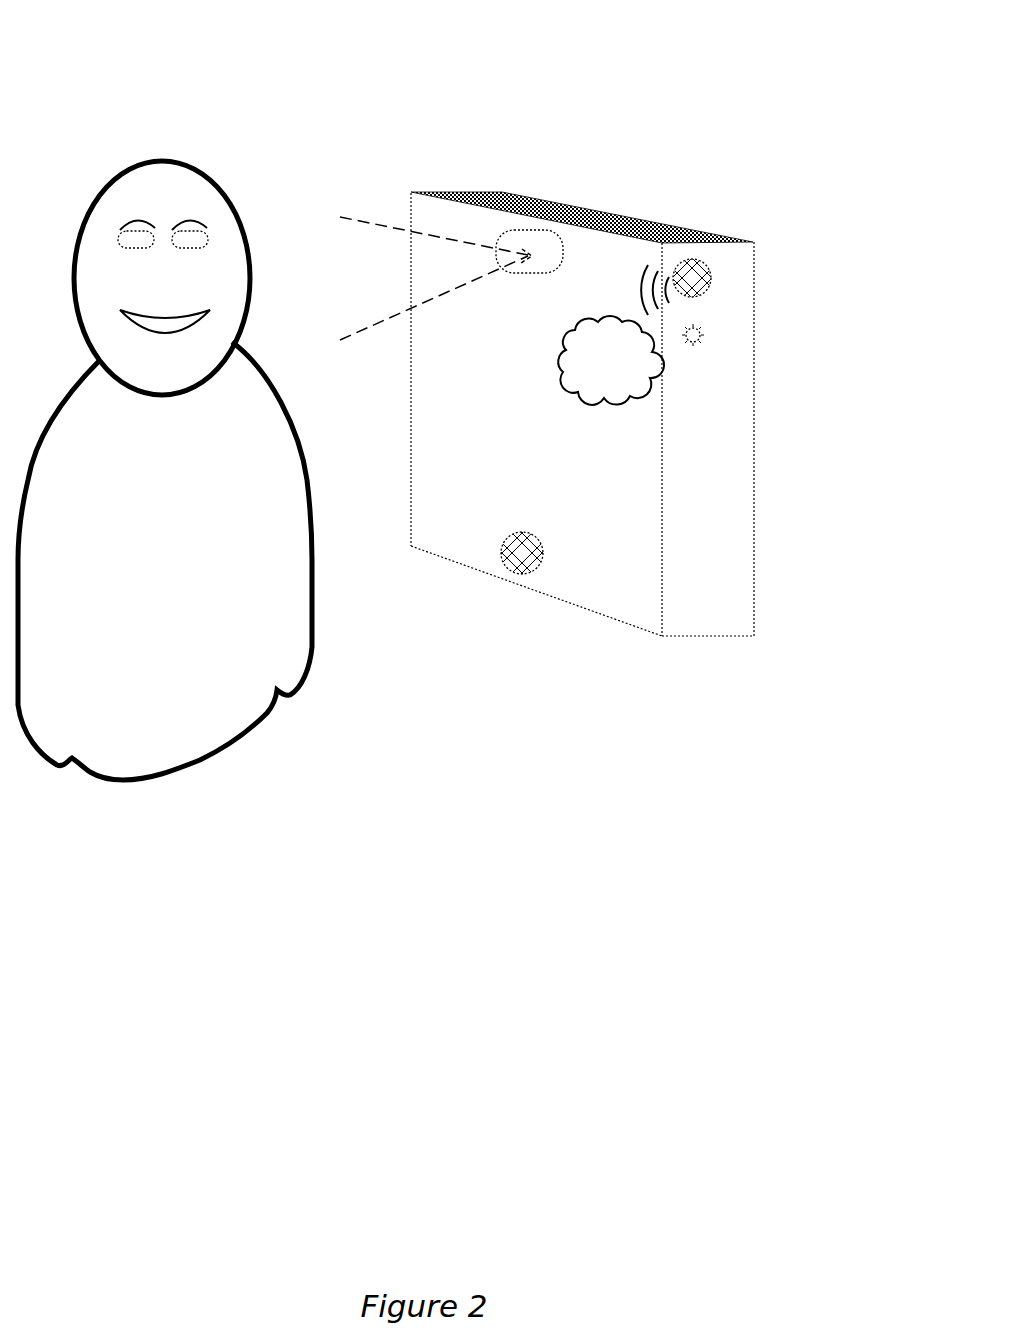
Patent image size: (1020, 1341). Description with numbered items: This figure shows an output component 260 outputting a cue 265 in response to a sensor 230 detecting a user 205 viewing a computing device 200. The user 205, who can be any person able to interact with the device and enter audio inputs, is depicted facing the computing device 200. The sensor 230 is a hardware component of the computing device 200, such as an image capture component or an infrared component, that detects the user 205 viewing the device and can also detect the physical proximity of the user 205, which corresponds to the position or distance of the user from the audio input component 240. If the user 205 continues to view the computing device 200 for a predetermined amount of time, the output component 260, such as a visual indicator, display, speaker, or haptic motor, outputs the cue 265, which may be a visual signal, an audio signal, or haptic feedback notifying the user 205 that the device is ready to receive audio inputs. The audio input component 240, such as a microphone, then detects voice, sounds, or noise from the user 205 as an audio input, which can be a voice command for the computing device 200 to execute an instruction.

The computing device 200 is at (649, 78).
The user 205 is at (165, 470).
The sensor 230 is at (533, 222).
The audio input component 240 is at (520, 592).
The output component 260 is at (696, 318).
The cue 265 is at (611, 360).